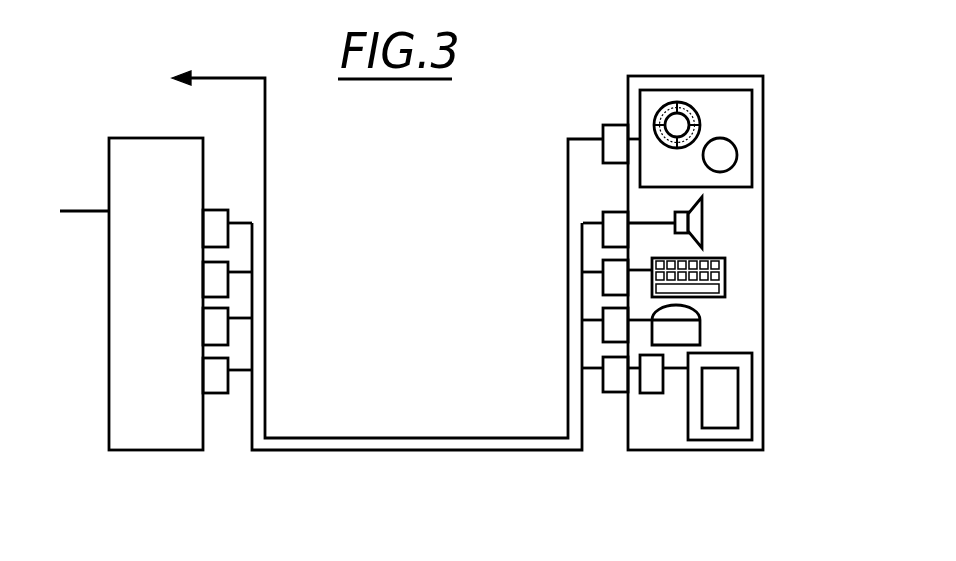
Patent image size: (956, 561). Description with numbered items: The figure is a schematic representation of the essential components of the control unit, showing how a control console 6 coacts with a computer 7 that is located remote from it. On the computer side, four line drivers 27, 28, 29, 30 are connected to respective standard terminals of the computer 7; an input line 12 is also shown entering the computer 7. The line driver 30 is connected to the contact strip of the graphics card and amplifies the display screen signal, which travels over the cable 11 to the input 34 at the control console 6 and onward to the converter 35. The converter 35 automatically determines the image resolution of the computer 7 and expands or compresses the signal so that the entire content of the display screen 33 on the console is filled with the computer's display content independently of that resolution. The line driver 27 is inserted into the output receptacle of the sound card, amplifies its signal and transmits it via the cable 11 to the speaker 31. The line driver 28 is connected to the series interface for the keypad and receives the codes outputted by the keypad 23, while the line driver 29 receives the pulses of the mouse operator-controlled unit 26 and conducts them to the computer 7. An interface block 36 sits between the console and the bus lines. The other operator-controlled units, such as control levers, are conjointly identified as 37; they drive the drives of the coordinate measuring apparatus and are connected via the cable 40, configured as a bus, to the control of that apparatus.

The control console 6 is at (712, 458).
The computer 7 is at (170, 450).
The cable 11 is at (527, 450).
The input line 12 is at (66, 207).
The keypad 23 is at (725, 278).
The mouse operator-controlled unit 26 is at (700, 318).
The line driver 27 is at (228, 243).
The line driver 28 is at (228, 288).
The line driver 29 is at (228, 332).
The line driver 30 is at (228, 382).
The speaker 31 is at (703, 212).
The display screen 33 is at (737, 397).
The input 34 is at (603, 240).
The converter 35 is at (653, 393).
The interface block 36 is at (603, 132).
The other operator-controlled units 37 is at (753, 133).
The cable 40 is at (393, 438).